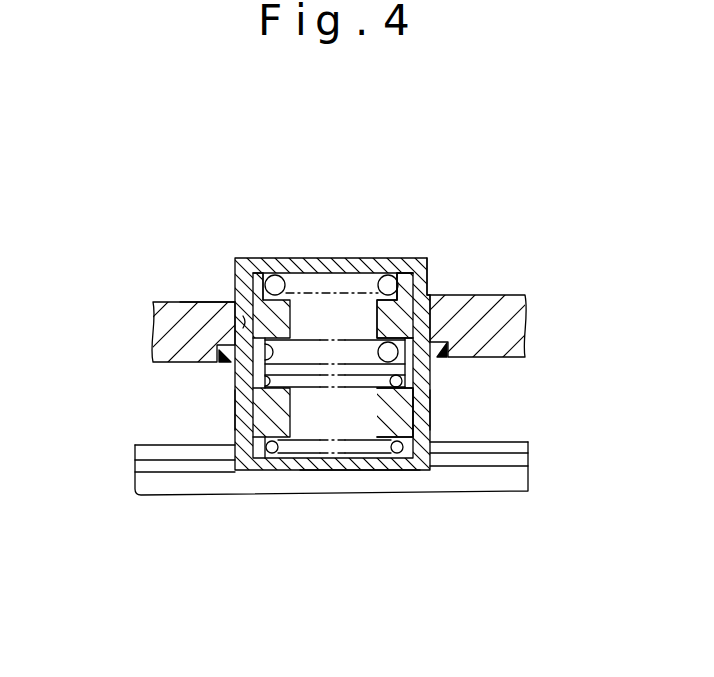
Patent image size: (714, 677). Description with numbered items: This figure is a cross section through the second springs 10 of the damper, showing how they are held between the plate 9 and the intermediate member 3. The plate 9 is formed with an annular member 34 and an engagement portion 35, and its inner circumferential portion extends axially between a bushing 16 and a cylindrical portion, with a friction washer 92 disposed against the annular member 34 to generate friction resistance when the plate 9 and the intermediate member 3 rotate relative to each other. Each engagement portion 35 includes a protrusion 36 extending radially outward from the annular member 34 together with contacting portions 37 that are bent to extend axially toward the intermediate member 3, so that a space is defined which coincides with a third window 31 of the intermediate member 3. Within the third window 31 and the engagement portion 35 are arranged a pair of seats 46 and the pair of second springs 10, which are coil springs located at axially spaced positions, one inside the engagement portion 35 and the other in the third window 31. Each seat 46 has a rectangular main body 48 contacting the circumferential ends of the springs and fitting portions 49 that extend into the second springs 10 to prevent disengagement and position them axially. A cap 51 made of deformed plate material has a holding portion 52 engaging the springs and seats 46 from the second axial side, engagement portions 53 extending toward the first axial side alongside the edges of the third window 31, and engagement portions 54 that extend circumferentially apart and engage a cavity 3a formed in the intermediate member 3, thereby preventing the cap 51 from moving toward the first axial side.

The intermediate member 3 is at (496, 306).
The cavity 3a is at (215, 352).
The plate 9 is at (522, 428).
The second spring 10 is at (273, 262).
The bushing 16 is at (187, 486).
The third window 31 is at (212, 302).
The annular member 34 is at (482, 478).
The engagement portion 35 is at (447, 383).
The protrusion 36 is at (360, 459).
The contacting portion 37 is at (236, 405).
The seat 46 is at (350, 312).
The main body 48 is at (431, 287).
The fitting portion 49 is at (384, 300).
The cap 51 is at (254, 253).
The holding portion 52 is at (303, 272).
The engagement portion 53 is at (243, 292).
The engagement portion 54 is at (449, 349).
The friction washer 92 is at (528, 442).